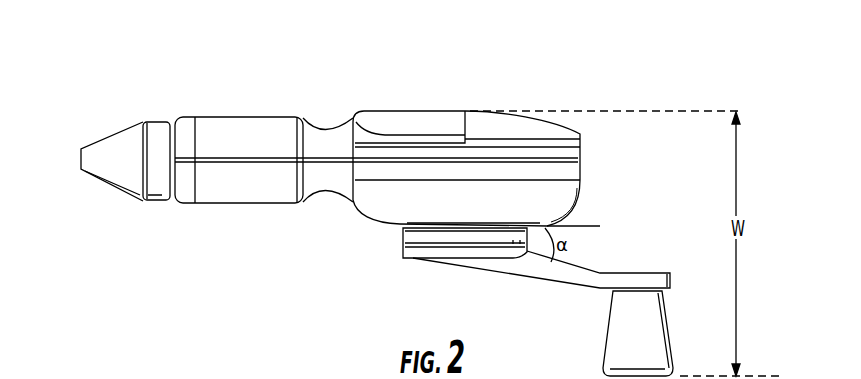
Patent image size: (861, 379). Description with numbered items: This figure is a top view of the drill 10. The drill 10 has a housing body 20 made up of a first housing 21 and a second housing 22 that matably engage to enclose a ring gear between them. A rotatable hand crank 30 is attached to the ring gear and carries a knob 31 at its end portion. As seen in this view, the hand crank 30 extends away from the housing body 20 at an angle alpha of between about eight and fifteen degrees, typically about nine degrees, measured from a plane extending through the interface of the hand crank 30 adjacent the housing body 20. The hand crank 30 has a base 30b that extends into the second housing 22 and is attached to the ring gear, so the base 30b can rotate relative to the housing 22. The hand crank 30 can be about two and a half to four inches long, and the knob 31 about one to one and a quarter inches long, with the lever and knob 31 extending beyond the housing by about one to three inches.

The drill 10 is at (435, 90).
The housing body 20 is at (354, 212).
The first housing 21 is at (575, 147).
The second housing 22 is at (560, 192).
The hand crank 30 is at (628, 283).
The base 30b is at (404, 240).
The knob 31 is at (650, 338).